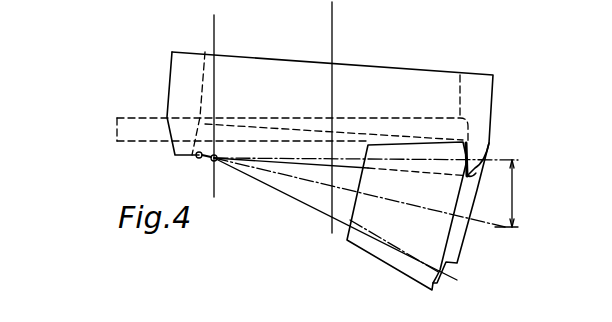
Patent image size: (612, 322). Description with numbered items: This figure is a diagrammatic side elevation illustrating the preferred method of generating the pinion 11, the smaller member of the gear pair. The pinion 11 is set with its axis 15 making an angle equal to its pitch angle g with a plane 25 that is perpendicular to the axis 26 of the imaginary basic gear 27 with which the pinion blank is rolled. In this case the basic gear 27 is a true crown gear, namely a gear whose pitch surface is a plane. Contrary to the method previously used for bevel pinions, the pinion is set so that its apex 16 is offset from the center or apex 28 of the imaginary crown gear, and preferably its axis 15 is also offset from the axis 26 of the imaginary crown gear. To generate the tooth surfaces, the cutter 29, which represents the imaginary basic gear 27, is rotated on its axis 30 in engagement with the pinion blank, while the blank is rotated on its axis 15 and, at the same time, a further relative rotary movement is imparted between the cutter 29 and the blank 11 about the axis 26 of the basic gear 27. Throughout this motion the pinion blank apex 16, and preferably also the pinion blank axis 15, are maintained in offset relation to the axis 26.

The pinion 11 is at (436, 287).
The axis of the pinion 15 is at (506, 231).
The apex of the pinion 16 is at (195, 157).
The plane 25 is at (498, 160).
The axis of the imaginary basic gear 26 is at (216, 30).
The imaginary basic gear 27 is at (114, 131).
The apex of the imaginary crown gear 28 is at (211, 161).
The cutter 29 is at (483, 110).
The axis of the cutter 30 is at (334, 38).
The pitch angle g is at (518, 193).